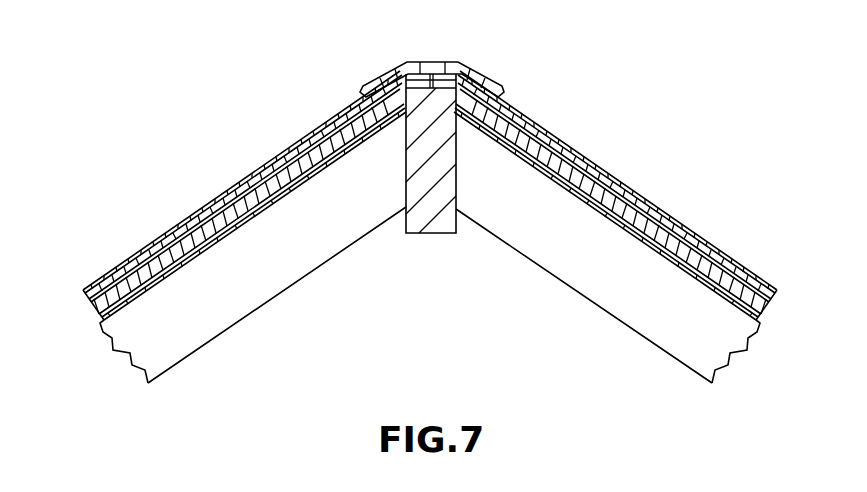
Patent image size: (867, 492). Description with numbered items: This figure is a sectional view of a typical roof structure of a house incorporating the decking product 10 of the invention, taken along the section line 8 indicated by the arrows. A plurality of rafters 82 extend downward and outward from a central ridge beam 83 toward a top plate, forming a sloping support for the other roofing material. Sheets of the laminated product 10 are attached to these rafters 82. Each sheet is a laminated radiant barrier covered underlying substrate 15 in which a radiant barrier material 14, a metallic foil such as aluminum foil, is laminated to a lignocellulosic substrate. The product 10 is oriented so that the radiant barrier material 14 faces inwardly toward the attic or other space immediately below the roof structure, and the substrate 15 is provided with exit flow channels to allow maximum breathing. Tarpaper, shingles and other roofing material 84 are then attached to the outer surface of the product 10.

The section line 8- 8 is at (355, 20).
The laminated product 10 is at (187, 263).
The radiant barrier material 14 is at (268, 210).
The laminated radiant barrier covered underlying substrate 15 is at (90, 308).
The rafters 82 is at (212, 327).
The ridge beam 83 is at (436, 235).
The roofing material 84 is at (217, 199).